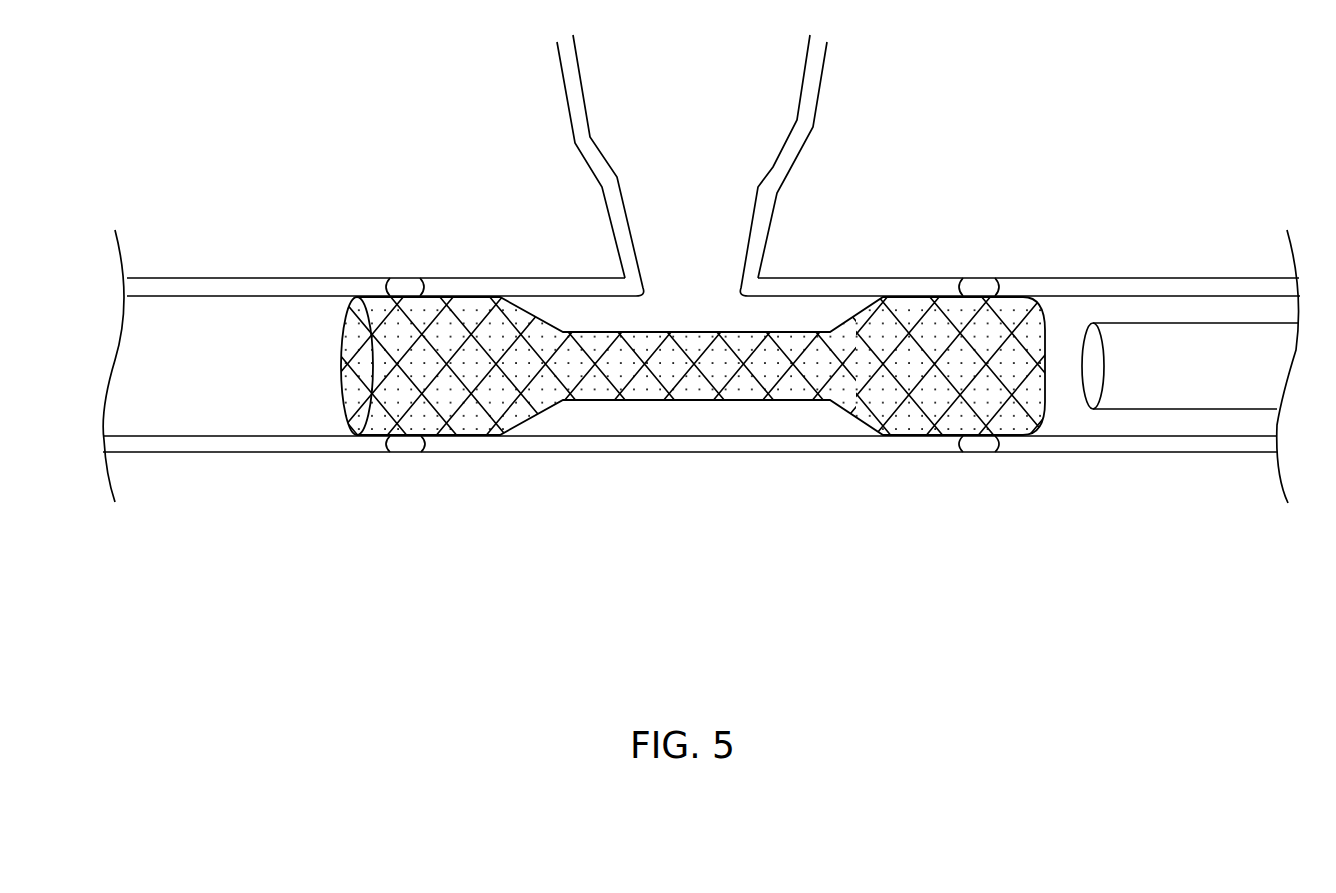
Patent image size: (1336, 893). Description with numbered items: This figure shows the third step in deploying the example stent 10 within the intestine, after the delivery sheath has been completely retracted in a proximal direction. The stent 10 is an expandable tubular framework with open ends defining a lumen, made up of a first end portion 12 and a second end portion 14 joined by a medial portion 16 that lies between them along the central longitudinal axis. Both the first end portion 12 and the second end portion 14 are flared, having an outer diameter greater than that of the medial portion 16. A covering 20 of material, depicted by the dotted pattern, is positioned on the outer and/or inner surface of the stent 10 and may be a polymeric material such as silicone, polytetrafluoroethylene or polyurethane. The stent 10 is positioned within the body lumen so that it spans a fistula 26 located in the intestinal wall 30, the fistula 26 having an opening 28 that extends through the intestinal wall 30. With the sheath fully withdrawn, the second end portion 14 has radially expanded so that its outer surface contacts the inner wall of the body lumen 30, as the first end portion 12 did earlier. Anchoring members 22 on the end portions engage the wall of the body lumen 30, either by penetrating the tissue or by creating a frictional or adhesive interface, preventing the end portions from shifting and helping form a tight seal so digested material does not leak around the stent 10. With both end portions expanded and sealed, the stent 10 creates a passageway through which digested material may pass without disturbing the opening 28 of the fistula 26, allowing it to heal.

The stent 10 is at (907, 317).
The first end portion 12 is at (459, 436).
The second end portion 14 is at (1013, 317).
The medial portion 16 is at (787, 333).
The covering 20 is at (475, 320).
The anchoring members 22 is at (422, 295).
The fistula 26 is at (846, 89).
The opening 28 is at (678, 262).
The intestinal wall 30 is at (605, 443).